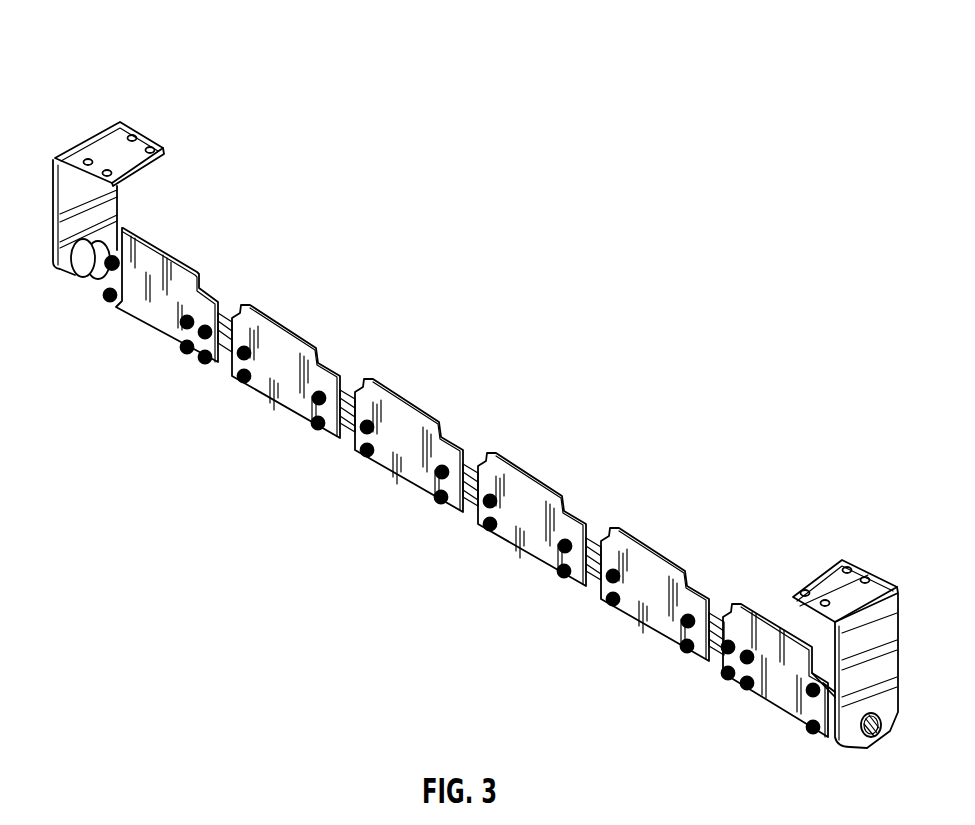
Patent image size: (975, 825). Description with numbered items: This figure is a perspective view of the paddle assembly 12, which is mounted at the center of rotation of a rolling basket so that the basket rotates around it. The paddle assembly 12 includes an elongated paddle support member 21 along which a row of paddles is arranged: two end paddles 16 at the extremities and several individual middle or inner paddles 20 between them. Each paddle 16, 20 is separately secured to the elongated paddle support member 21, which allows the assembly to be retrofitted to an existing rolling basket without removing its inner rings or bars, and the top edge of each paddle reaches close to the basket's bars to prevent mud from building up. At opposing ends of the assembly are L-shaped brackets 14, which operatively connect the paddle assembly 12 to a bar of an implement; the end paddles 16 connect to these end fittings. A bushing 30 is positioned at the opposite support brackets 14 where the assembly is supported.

The paddle assembly 12 is at (130, 56).
The bracket 14 is at (138, 141).
The end paddle 16 is at (158, 248).
The middle paddle 20 is at (289, 323).
The elongated paddle support member 21 is at (474, 508).
The bushing 30 is at (72, 273).